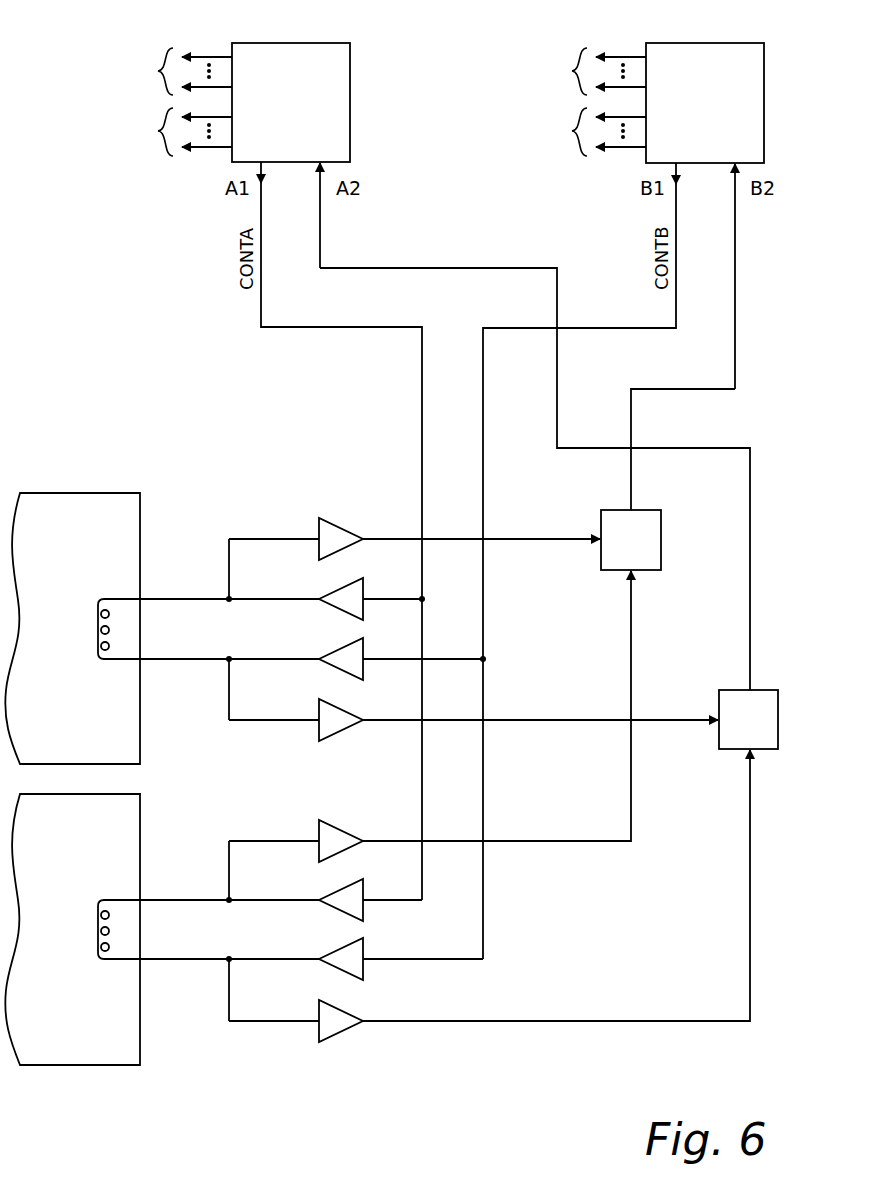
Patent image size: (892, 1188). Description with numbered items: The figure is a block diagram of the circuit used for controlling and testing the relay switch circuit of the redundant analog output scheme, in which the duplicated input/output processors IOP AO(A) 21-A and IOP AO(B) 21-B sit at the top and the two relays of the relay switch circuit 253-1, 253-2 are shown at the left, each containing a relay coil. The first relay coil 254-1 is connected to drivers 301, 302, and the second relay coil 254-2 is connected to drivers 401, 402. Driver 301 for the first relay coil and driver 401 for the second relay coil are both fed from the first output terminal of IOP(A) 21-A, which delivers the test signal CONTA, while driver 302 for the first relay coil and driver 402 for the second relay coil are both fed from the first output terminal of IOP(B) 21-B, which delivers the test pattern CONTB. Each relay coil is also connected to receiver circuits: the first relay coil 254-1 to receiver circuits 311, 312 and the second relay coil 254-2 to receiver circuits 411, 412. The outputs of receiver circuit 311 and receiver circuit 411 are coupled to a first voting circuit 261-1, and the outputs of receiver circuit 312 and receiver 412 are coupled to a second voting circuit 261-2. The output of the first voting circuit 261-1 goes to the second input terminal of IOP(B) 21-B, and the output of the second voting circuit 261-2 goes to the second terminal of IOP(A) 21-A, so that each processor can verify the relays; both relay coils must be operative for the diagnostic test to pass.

The IOP AO(A) 21-A is at (315, 43).
The IOP AO(B) 21-B is at (728, 43).
The relay switch circuit 253-1 is at (130, 531).
The relay switch circuit 253-2 is at (125, 832).
The first relay coil 254-1 is at (108, 661).
The second relay coil 254-2 is at (108, 962).
The first voting circuit 261-1 is at (622, 510).
The second voting circuit 261-2 is at (758, 690).
The receiver circuit 311 is at (320, 524).
The driver 301 is at (320, 592).
The driver 302 is at (318, 653).
The receiver circuit 312 is at (318, 706).
The receiver circuit 411 is at (320, 826).
The driver 401 is at (320, 894).
The driver 402 is at (318, 953).
The receiver circuit 412 is at (318, 1008).